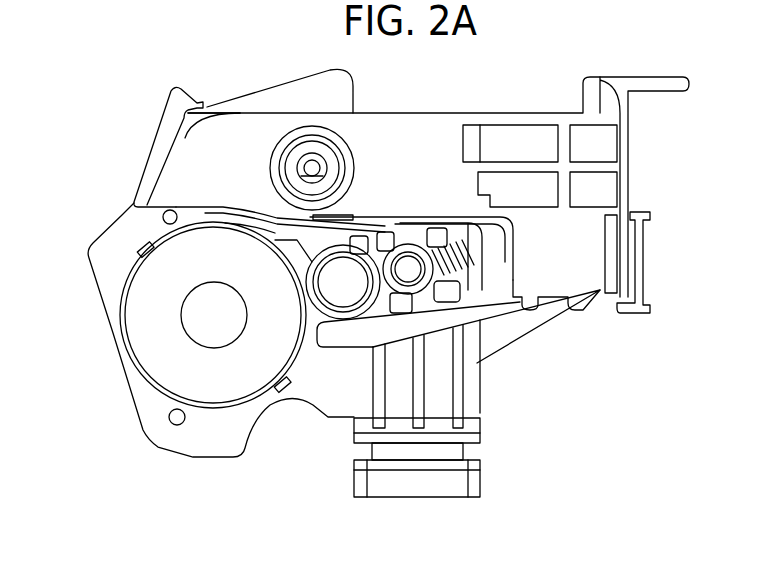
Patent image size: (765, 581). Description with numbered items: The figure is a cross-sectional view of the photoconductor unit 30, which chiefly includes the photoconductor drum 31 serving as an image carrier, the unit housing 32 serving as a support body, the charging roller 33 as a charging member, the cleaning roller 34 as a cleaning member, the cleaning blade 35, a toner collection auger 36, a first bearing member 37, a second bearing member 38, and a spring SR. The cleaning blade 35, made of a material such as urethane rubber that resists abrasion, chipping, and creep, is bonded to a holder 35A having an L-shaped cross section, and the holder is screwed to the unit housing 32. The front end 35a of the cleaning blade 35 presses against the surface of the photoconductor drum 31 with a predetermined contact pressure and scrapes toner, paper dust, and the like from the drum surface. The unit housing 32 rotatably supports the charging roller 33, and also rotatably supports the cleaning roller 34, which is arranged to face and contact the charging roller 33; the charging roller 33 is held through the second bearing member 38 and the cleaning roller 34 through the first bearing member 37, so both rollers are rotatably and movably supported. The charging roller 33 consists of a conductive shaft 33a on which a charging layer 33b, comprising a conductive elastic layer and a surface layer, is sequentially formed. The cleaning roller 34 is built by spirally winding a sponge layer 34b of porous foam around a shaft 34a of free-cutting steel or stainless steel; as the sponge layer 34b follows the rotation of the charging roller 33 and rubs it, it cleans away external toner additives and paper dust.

The photoconductor unit 30 is at (123, 126).
The photoconductor drum 31 is at (130, 358).
The unit housing 32 is at (118, 238).
The charging roller 33 is at (310, 392).
The conductive shaft 33a is at (345, 300).
The charging layer 33b is at (318, 318).
The cleaning roller 34 is at (485, 339).
The shaft 34a is at (408, 272).
The sponge layer 34b is at (400, 295).
The cleaning blade 35 is at (256, 216).
The front end 35a is at (238, 232).
The holder 35A is at (477, 245).
The toner collection auger 36 is at (327, 150).
The first bearing member 37 is at (390, 240).
The second bearing member 38 is at (360, 240).
The spring SR is at (460, 287).